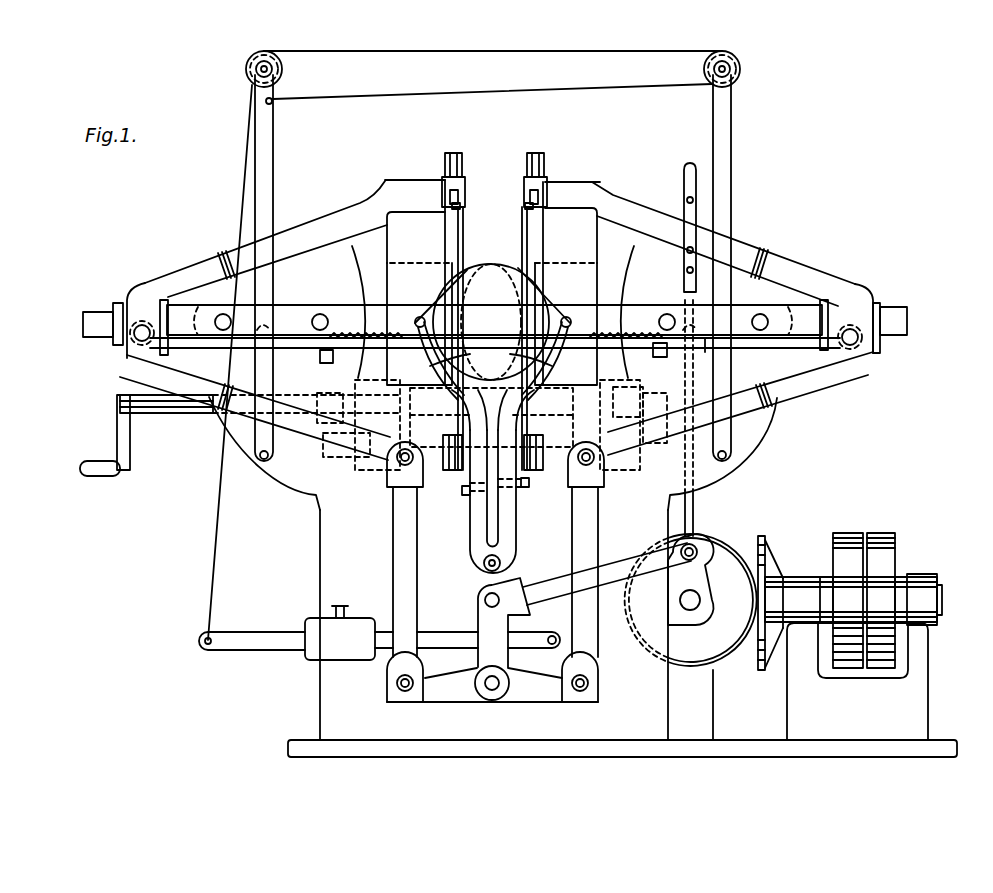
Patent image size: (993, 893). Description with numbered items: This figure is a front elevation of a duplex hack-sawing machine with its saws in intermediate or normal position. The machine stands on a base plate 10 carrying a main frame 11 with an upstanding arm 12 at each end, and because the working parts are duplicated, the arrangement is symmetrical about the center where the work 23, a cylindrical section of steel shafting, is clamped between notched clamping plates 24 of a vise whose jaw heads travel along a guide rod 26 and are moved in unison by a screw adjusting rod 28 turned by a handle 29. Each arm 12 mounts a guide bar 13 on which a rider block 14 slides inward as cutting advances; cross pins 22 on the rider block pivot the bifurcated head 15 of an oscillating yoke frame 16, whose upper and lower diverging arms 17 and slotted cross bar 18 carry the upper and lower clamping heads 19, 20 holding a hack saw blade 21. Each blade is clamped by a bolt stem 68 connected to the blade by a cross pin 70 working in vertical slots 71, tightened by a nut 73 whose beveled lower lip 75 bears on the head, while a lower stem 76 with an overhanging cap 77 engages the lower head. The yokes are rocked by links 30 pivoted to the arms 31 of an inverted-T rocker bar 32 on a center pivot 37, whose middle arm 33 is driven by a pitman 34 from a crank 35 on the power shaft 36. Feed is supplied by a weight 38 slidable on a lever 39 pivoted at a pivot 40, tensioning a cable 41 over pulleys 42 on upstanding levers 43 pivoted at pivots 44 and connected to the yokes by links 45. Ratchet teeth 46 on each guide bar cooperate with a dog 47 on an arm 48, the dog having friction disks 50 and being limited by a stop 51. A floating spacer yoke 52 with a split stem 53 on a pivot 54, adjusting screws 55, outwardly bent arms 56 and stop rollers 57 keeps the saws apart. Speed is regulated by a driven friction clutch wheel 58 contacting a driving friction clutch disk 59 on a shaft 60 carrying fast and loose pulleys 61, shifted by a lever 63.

The base plate 10 is at (610, 750).
The main frame 11 is at (624, 625).
The upstanding arm 12 is at (232, 441).
The guide bar 13 is at (908, 325).
The rider block 14 is at (115, 340).
The bifurcated head 15 is at (130, 291).
The oscillating yoke frame 16 is at (500, 243).
The arm 17 is at (333, 214).
The cross bar 18 is at (382, 246).
The upper clamping head 19 is at (401, 192).
The lower clamping head 20 is at (546, 468).
The hack saw blade 21 is at (522, 246).
The cross pin 22 is at (858, 343).
The work 23 is at (491, 322).
The clamping plate 24 is at (406, 271).
The guide rod 26 is at (357, 468).
The screw adjusting rod 28 is at (177, 415).
The handle 29 is at (130, 468).
The link 30 is at (393, 525).
The arm 31 is at (540, 698).
The rocker bar 32 is at (496, 696).
The middle arm 33 is at (478, 610).
The pitman 34 is at (547, 583).
The crank 35 is at (708, 548).
The power shaft 36 is at (692, 605).
The center pivot 37 is at (487, 692).
The weight 38 is at (340, 633).
The lever 39 is at (280, 649).
The pivot 40 is at (553, 634).
The cable 41 is at (484, 60).
The pulley 42 is at (247, 65).
The upstanding lever 43 is at (257, 183).
The pivot 44 is at (731, 457).
The link 45 is at (210, 311).
The ratchet teeth 46 is at (343, 309).
The dog 47 is at (345, 381).
The arm 48 is at (706, 348).
The friction disk 50 is at (437, 362).
The stop 51 is at (320, 356).
The floating spacer yoke 52 is at (470, 513).
The split stem 53 is at (500, 513).
The pivot 54 is at (483, 563).
The adjusting screw 55 is at (462, 490).
The outwardly bent arm 56 is at (491, 355).
The stop roller 57 is at (420, 316).
The driven friction clutch wheel 58 is at (691, 600).
The driving friction clutch disk 59 is at (758, 663).
The shaft 60 is at (940, 603).
The fast and loose pulleys 61 is at (878, 536).
The lever 63 is at (694, 506).
The bolt stem 68 is at (452, 209).
The cross pin 70 is at (465, 184).
The vertical slot 71 is at (463, 197).
The nut 73 is at (445, 165).
The lower lip 75 is at (535, 160).
The lower stem 76 is at (487, 442).
The overhanging cap 77 is at (403, 489).